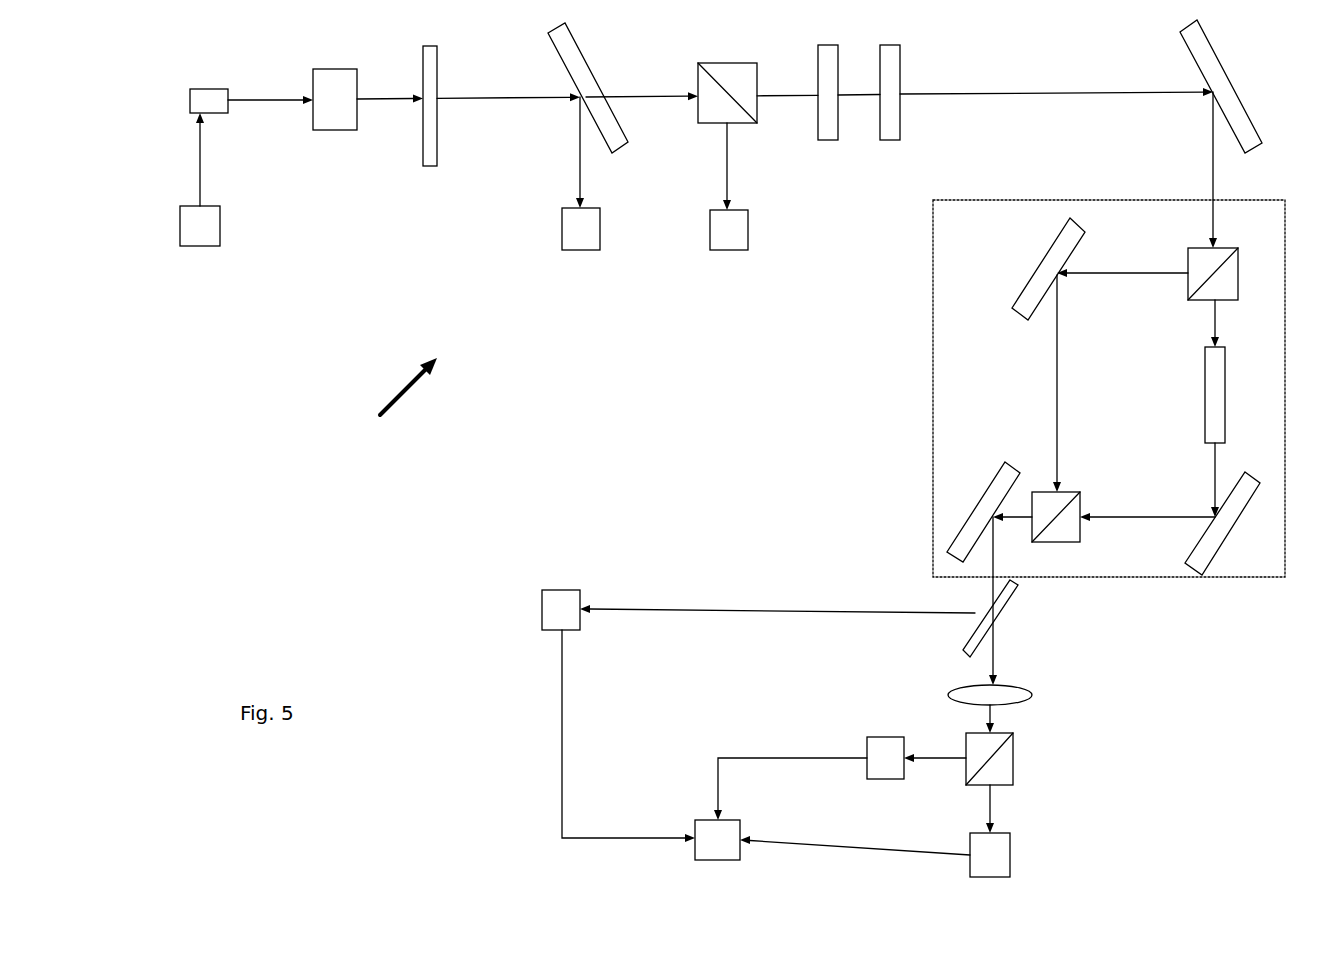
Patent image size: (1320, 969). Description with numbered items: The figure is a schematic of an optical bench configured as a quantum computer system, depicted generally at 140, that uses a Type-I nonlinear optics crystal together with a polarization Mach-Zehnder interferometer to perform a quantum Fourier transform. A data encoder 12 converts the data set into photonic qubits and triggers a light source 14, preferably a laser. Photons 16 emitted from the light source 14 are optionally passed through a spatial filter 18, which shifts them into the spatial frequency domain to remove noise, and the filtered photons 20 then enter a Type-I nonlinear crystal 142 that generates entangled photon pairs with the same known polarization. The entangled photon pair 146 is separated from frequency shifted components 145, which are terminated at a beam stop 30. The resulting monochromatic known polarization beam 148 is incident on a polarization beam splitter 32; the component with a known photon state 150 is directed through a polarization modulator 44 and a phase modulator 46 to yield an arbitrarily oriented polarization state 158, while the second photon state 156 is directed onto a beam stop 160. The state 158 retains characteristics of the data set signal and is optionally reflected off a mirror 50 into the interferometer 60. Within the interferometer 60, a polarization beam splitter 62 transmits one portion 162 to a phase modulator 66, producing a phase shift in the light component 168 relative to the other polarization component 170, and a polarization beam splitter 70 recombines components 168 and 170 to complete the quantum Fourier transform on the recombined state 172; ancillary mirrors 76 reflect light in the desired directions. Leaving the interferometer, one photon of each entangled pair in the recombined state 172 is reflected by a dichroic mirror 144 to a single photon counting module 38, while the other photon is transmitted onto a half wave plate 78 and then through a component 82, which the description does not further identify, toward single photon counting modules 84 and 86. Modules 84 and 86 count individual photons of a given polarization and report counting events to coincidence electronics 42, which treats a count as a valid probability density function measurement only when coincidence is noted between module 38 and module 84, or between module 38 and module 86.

The data encoder 12 is at (200, 179).
The light source 14 is at (211, 103).
The photons 16 is at (276, 95).
The spatial filter 18 is at (335, 99).
The photons 20 is at (390, 100).
The Type-I nonlinear crystal 142 is at (433, 125).
The entangled photon pair with same known polarization 146 is at (490, 90).
The frequency shifted components 145 is at (578, 155).
The monochromatic known polarization beam 148 is at (644, 98).
The beam stop 30 is at (581, 173).
The polarization beam splitter 32 is at (727, 93).
The known photon state 150 is at (788, 100).
The second photon state 156 is at (730, 157).
The beam stop 160 is at (729, 230).
The polarization modulator 44 is at (848, 107).
The phase modulator 46 is at (892, 105).
The arbitrarily oriented polarization state 158 is at (1035, 88).
The mirror 50 is at (1225, 65).
The interferometer 60 is at (922, 322).
The ancillary mirrors 76 is at (1060, 262).
The polarization beam splitter 62 is at (1213, 196).
The transmitted portion 162 is at (1213, 323).
The phase modulator 66 is at (1215, 397).
The light component 168 is at (1129, 513).
The polarization beam splitter 70 is at (1056, 517).
The other polarization component 170 is at (1055, 343).
The recombined state 172 is at (1000, 518).
The dichroic mirror 144 is at (987, 613).
The half wave plate 78 is at (1032, 693).
The single photon counting module 38 is at (758, 610).
The beam splitter 82 is at (989, 745).
The single photon counting module 84 is at (840, 778).
The single photon counting module 86 is at (875, 831).
The coincidence electronics 42 is at (651, 745).
The inventive system 140 is at (384, 404).